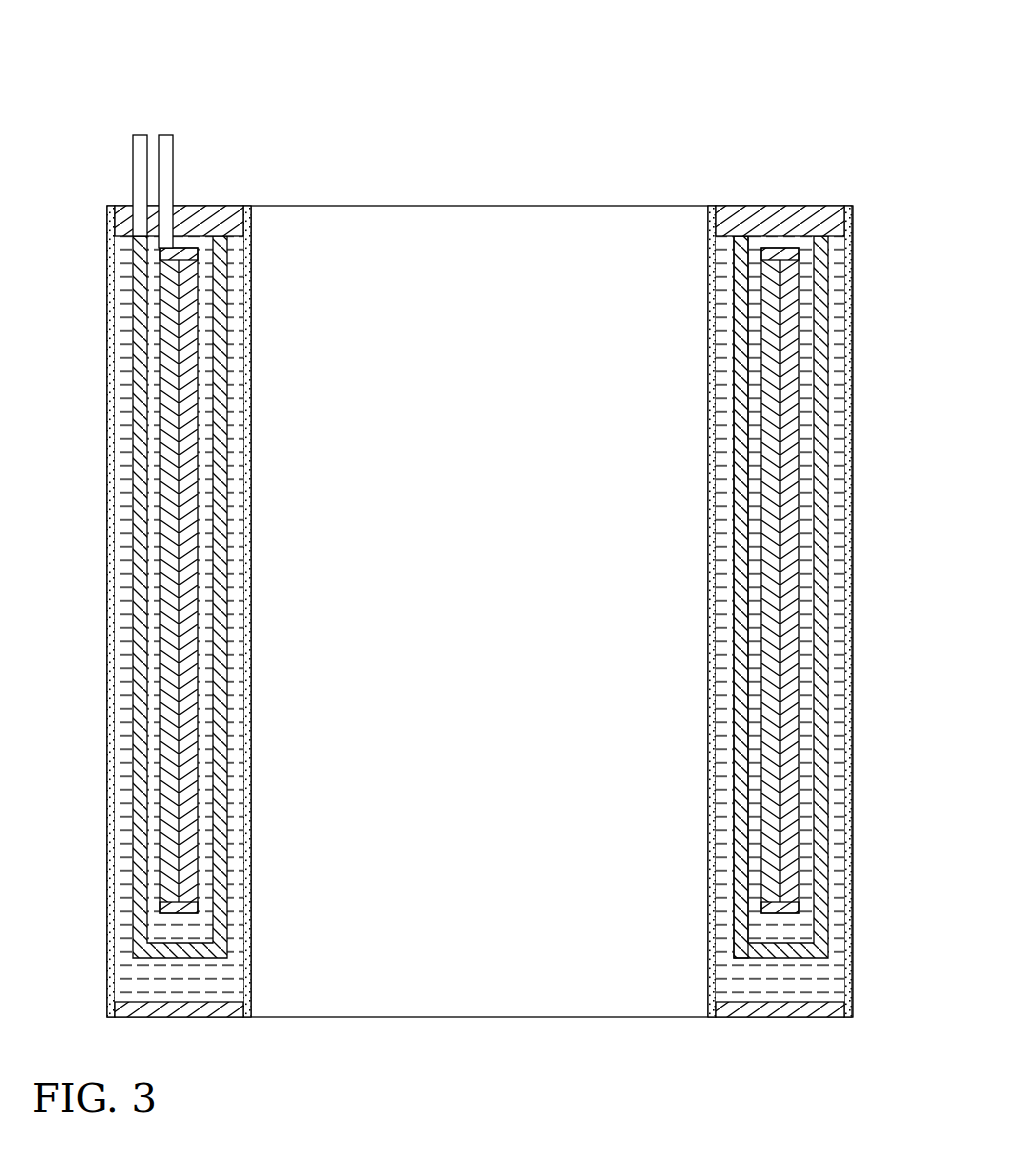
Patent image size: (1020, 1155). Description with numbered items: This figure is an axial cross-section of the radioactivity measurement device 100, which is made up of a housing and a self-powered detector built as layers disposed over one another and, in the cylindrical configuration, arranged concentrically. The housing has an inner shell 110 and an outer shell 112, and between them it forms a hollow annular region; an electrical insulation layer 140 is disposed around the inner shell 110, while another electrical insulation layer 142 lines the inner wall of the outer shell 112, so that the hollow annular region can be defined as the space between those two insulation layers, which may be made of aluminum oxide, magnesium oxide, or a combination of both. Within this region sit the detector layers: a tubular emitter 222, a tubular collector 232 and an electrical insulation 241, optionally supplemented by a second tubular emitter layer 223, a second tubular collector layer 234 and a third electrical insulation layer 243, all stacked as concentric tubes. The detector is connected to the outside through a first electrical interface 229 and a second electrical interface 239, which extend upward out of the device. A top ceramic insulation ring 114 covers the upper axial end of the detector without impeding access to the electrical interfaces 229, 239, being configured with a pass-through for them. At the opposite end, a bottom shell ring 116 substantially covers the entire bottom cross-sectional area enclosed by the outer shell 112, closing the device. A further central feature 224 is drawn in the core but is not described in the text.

The radioactivity measurement device 100 is at (157, 72).
The inner shell 110 is at (251, 363).
The outer shell 112 is at (107, 335).
The top ceramic insulation ring 114 is at (770, 218).
The bottom shell ring 116 is at (190, 1010).
The electrical insulation layer 140 is at (727, 530).
The electrical insulation layer 142 is at (833, 570).
The tubular emitter 222 is at (158, 422).
The second tubular emitter layer 223 is at (195, 474).
The current collector 224 is at (182, 542).
The first electrical interface 229 is at (173, 178).
The tubular collector 232 is at (828, 340).
The second tubular collector layer 234 is at (735, 348).
The second electrical interface 239 is at (133, 178).
The electrical insulation 241 is at (810, 462).
The third electrical insulation layer 243 is at (757, 610).